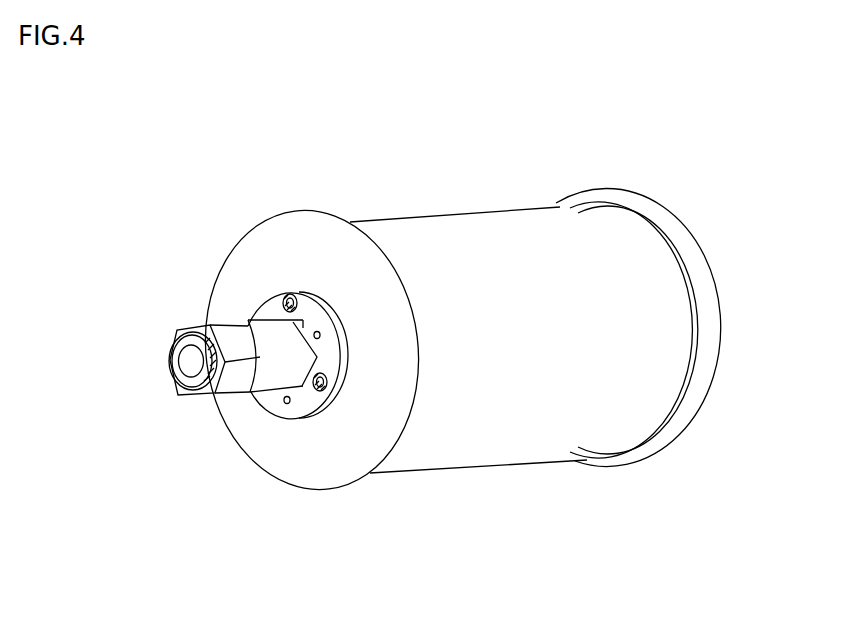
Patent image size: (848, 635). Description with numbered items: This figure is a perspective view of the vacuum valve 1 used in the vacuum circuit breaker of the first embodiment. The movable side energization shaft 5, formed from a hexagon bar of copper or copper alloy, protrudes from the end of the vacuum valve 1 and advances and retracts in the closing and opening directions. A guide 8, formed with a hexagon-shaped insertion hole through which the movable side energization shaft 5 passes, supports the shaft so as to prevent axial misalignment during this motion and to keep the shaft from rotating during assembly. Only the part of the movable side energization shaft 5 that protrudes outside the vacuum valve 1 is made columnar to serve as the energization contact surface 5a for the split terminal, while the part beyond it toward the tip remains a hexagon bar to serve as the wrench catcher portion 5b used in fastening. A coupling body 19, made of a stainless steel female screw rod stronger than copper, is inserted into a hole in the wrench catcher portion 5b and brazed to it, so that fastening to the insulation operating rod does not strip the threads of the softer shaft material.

The vacuum valve 1 is at (490, 248).
The movable side energization shaft 5 is at (270, 372).
The energization contact surface 5a is at (265, 340).
The wrench catcher portion 5b is at (212, 357).
The guide 8 is at (333, 370).
The coupling body 19 is at (185, 383).